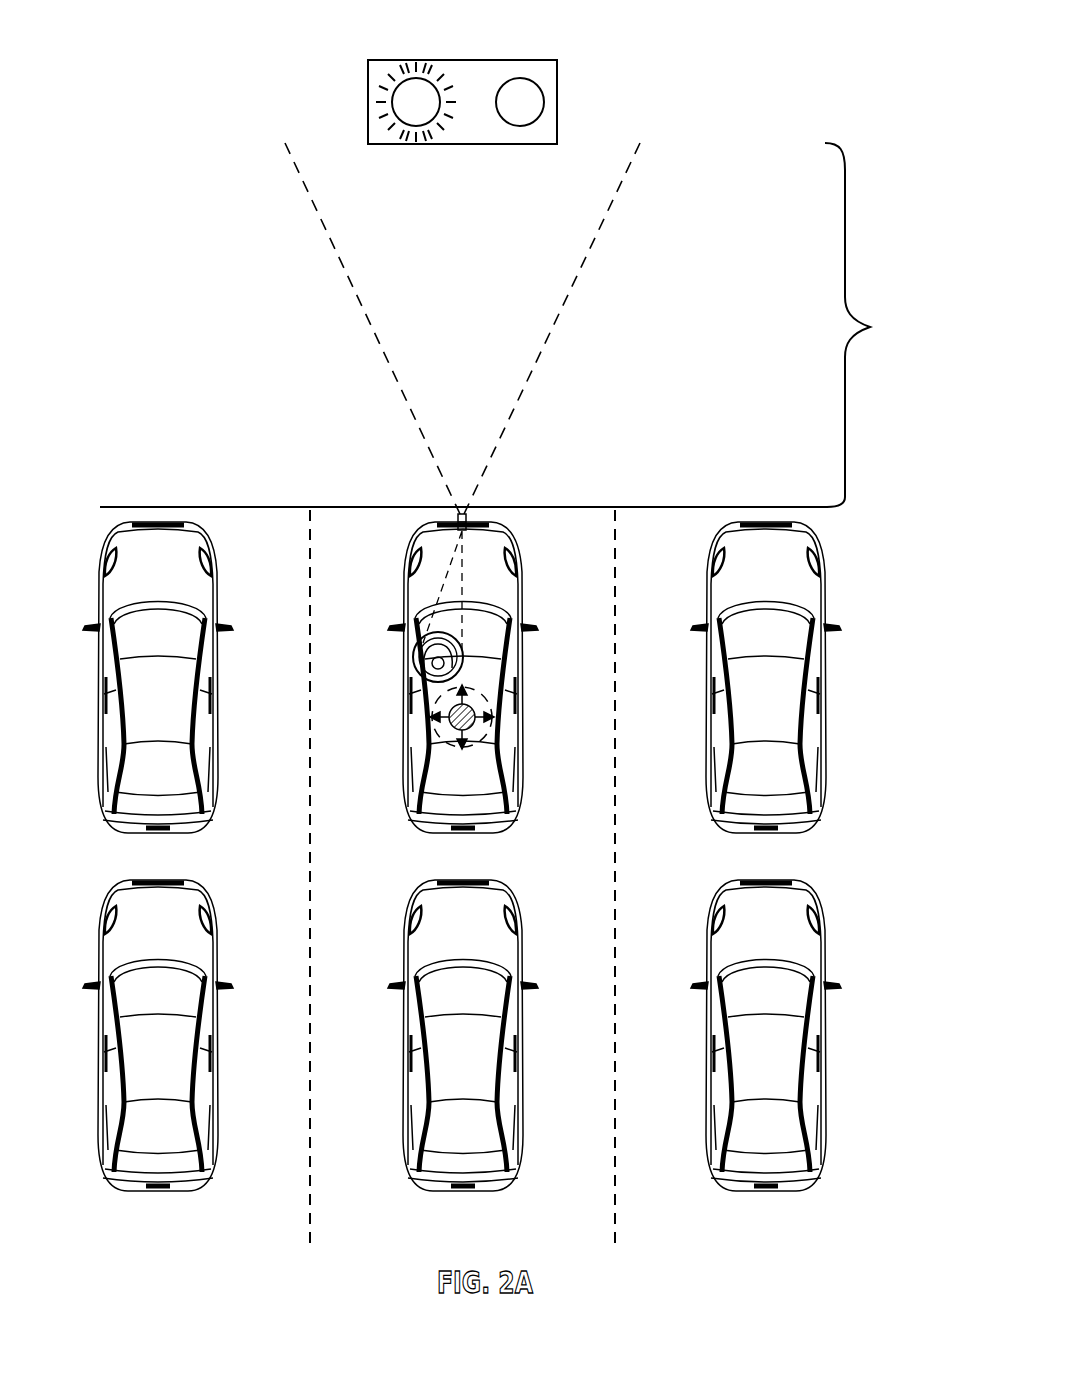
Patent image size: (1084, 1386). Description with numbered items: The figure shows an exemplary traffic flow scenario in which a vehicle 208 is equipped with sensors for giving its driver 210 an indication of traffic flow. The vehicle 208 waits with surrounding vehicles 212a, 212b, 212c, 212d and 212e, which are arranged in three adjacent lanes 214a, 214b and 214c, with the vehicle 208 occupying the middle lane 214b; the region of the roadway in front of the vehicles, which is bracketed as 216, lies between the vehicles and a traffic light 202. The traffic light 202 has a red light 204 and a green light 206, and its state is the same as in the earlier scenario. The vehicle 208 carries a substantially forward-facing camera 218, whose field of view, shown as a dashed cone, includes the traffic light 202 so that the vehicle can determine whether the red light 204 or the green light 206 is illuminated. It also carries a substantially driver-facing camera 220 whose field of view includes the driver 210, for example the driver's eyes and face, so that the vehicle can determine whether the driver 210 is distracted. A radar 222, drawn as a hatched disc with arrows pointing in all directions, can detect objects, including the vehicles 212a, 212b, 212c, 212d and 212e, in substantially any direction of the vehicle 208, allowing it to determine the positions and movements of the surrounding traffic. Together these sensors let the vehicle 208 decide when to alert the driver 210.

The traffic light 202 is at (558, 94).
The red light 204 is at (420, 70).
The green light 206 is at (520, 78).
The vehicle 208 is at (514, 684).
The driver 210 is at (413, 666).
The vehicle 212a is at (218, 595).
The vehicle 212b is at (218, 953).
The vehicle 212c is at (523, 1012).
The vehicle 212d is at (826, 658).
The vehicle 212e is at (826, 1012).
The lane 214a is at (192, 498).
The lane 214b is at (601, 497).
The lane 214c is at (783, 498).
The roadway region 216 is at (877, 325).
The forward-facing camera 218 is at (467, 518).
The driver-facing camera 220 is at (432, 563).
The radar 222 is at (500, 728).